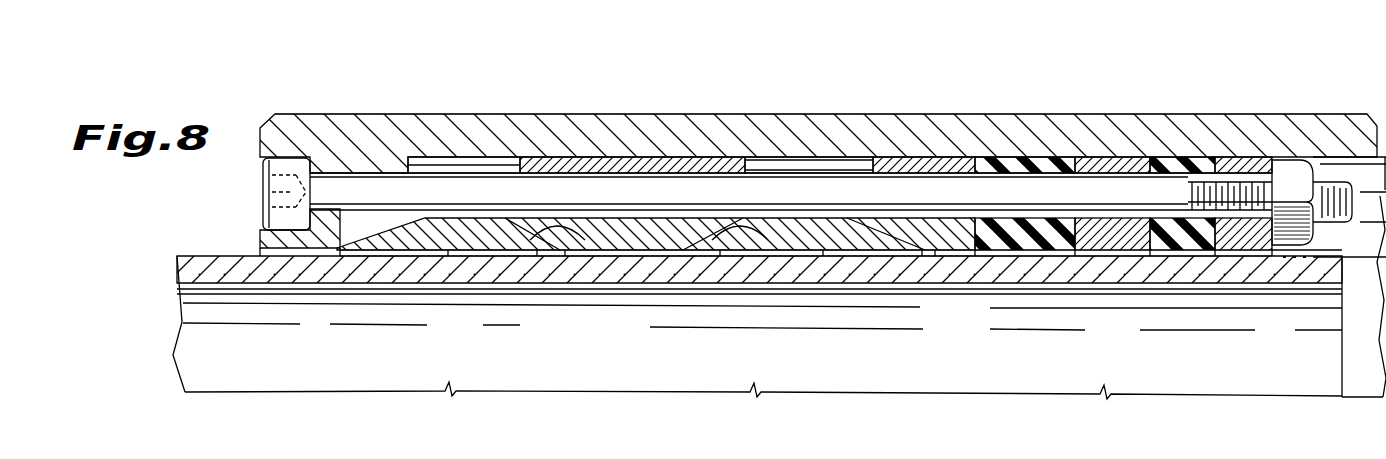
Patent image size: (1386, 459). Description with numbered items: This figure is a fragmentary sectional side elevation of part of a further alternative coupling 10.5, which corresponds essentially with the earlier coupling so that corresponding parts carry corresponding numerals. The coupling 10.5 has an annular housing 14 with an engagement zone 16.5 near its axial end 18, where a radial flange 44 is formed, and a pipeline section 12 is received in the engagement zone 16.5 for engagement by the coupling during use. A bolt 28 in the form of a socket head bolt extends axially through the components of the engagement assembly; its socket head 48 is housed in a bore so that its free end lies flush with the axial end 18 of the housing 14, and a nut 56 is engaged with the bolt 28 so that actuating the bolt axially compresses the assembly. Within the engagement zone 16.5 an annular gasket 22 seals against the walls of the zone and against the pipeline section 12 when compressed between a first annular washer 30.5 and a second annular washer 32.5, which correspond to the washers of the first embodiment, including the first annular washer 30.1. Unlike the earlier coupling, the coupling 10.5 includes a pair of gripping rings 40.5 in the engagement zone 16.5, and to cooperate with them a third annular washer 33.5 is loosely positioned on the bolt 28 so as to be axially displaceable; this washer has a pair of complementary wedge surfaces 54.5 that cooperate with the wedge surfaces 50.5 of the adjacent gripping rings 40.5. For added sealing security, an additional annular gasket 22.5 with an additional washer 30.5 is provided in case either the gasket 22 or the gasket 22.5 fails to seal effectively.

The coupling 10.5 is at (867, 96).
The pipeline section 12 is at (190, 291).
The annular housing 14 is at (905, 116).
The engagement zone 16.5 is at (496, 170).
The axial end 18 is at (268, 131).
The annular gasket 22 is at (1003, 163).
The additional annular gasket 22.5 is at (1163, 167).
The bolt 28 is at (361, 188).
The first annular washer 30.1 is at (1098, 243).
The first annular washer 30.5 is at (1249, 253).
The second annular washer 32.5 is at (961, 253).
The third annular washer 33.5 is at (618, 152).
The gripping ring 40.5 is at (450, 257).
The radial flange 44 is at (310, 243).
The socket head 48 is at (263, 197).
The wedge surface 50.5 is at (760, 222).
The complementary wedge surface 54.5 is at (587, 240).
The nut 56 is at (1292, 176).